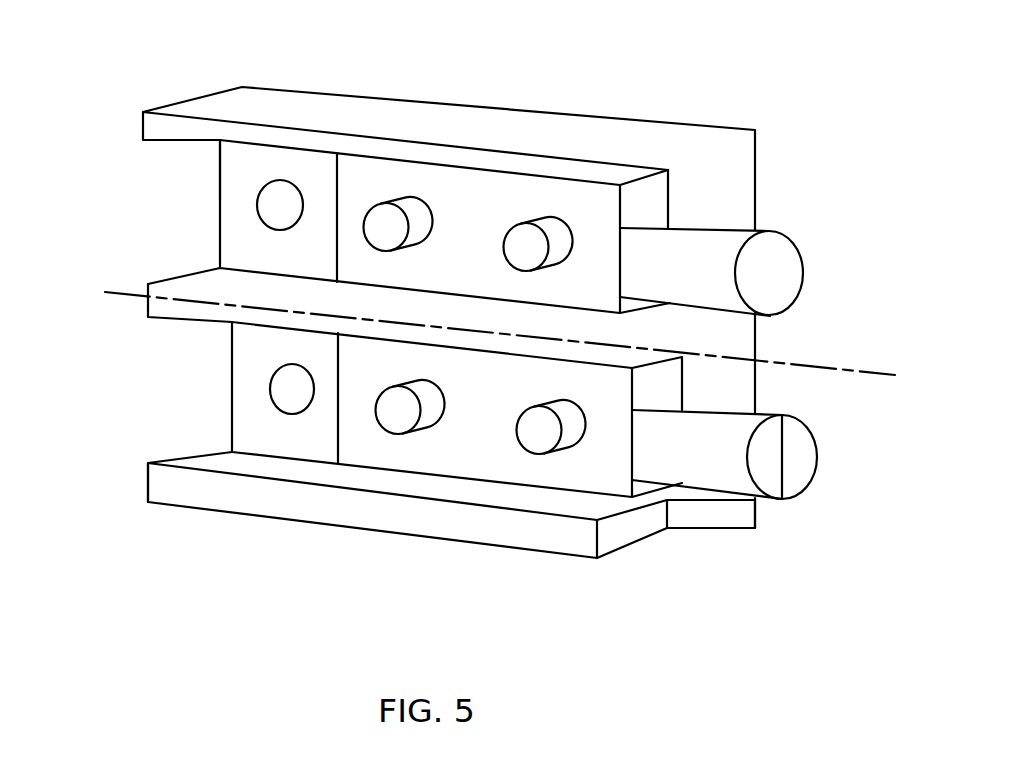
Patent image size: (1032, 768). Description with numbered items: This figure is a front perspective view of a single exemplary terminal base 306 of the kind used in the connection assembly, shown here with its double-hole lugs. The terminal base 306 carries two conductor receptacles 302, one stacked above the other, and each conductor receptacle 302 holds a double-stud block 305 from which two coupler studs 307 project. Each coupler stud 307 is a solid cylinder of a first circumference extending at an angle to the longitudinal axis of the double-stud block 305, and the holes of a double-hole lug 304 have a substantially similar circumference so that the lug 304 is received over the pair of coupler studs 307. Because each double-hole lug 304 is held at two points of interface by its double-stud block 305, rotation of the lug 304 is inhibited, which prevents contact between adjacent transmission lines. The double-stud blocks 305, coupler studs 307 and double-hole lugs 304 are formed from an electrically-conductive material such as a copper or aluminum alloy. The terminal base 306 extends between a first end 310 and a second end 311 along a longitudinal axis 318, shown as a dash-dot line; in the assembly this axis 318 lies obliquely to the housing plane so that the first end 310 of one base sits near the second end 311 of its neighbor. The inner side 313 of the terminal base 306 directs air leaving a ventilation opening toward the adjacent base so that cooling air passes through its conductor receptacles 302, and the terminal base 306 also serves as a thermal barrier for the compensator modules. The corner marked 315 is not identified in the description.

The conductor receptacle 302 is at (225, 364).
The double-hole lug 304 is at (723, 227).
The double-stud block 305 is at (325, 358).
The terminal base 306 is at (611, 580).
The coupler stud 307 is at (527, 247).
The first end 310 is at (828, 408).
The second end 311 is at (165, 188).
The inner side 313 is at (600, 96).
The base 315 is at (144, 521).
The longitudinal axis 318 is at (862, 365).